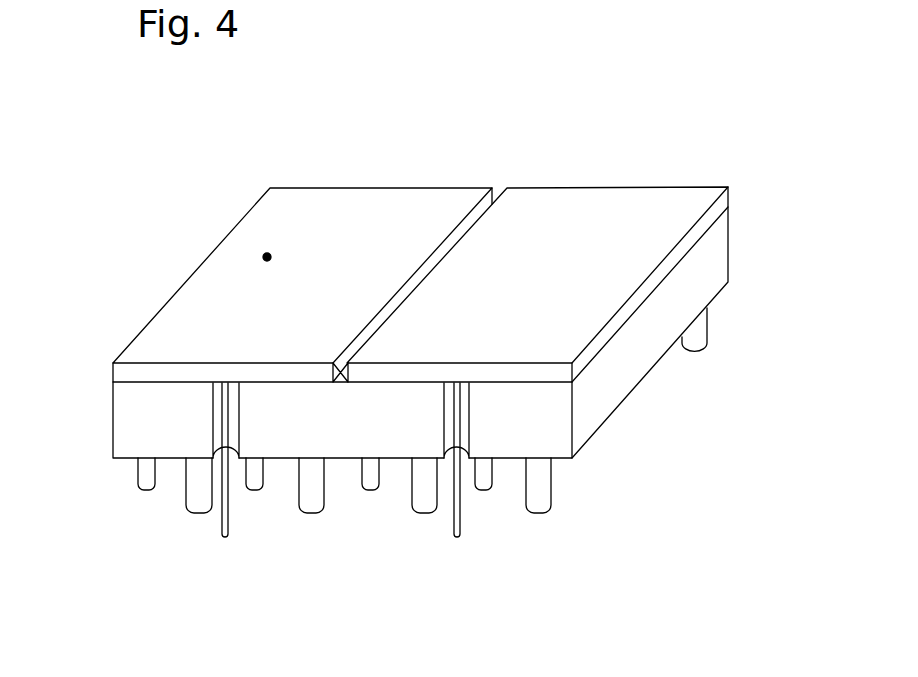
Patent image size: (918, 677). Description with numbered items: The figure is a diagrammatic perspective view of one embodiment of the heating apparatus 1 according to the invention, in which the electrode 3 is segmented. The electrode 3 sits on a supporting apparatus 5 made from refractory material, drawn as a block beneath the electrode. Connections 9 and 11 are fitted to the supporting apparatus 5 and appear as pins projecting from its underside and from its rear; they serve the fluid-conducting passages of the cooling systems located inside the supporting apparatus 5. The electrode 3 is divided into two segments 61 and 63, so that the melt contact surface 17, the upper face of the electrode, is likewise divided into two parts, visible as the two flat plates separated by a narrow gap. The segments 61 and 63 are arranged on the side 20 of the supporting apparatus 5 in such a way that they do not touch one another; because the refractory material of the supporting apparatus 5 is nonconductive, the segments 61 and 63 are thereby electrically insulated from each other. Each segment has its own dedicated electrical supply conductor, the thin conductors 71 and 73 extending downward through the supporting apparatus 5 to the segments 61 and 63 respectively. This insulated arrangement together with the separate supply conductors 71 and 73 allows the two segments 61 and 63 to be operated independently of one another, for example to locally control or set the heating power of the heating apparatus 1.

The heating apparatus 1 is at (735, 487).
The electrode 3 is at (451, 241).
The supporting apparatus 5 is at (728, 253).
The connections 9 is at (197, 513).
The connections 11 is at (143, 490).
The melt contact surface 17 is at (267, 257).
The side 20 is at (332, 362).
The segment 61 is at (352, 188).
The segment 63 is at (600, 188).
The electrical supply conductor 71 is at (228, 522).
The electrical supply conductor 73 is at (460, 530).